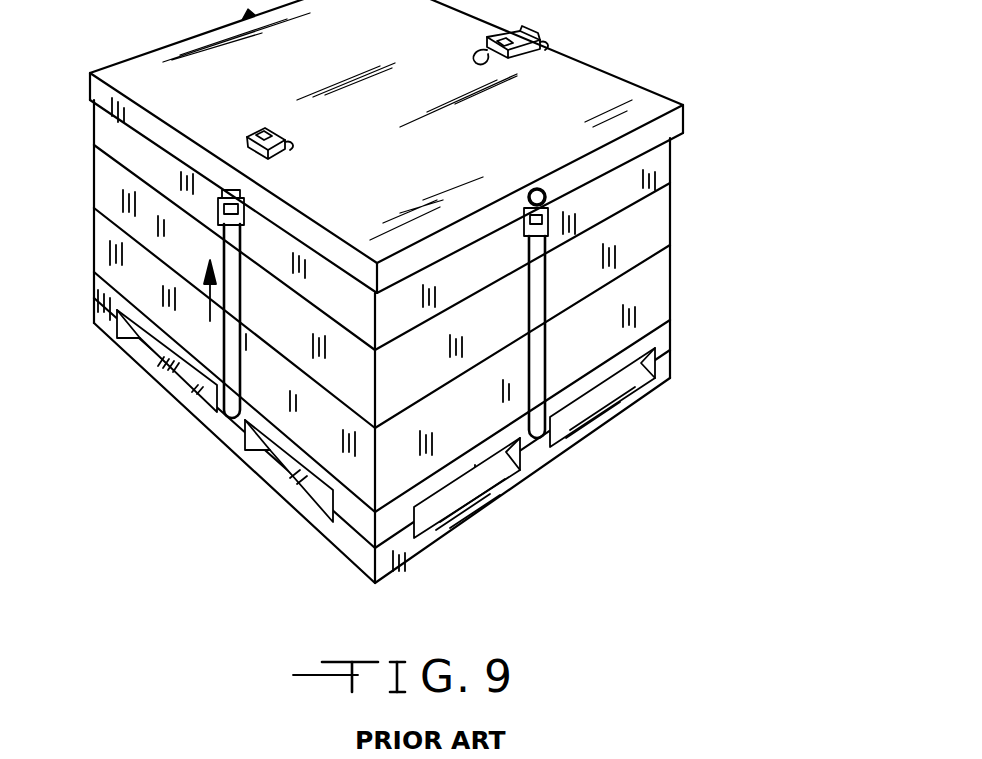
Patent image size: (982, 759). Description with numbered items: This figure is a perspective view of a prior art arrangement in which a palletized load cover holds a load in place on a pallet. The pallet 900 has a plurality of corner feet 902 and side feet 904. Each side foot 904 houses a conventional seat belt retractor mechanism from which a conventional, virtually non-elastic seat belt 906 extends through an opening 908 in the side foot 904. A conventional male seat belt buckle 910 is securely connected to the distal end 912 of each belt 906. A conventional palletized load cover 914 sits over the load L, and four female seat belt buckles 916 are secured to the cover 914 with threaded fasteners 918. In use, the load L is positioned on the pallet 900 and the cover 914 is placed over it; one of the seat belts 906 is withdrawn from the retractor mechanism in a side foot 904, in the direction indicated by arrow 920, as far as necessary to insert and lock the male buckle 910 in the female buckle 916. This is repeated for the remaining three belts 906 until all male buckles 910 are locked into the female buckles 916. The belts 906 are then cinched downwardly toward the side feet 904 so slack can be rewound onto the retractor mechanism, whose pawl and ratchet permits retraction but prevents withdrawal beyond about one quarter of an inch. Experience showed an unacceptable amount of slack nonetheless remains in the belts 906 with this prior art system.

The pallet 900 is at (688, 327).
The corner feet 902 is at (93, 323).
The side feet 904 is at (228, 432).
The opening 908 is at (295, 432).
The seat belt 906 is at (242, 285).
The male seat belt buckle 910 is at (240, 242).
The distal end 912 is at (225, 252).
The palletized load cover 914 is at (696, 103).
The female seat belt buckles 916 is at (257, 128).
The threaded fasteners 918 is at (292, 137).
The arrow 920 is at (210, 321).
The pallet load L is at (678, 284).